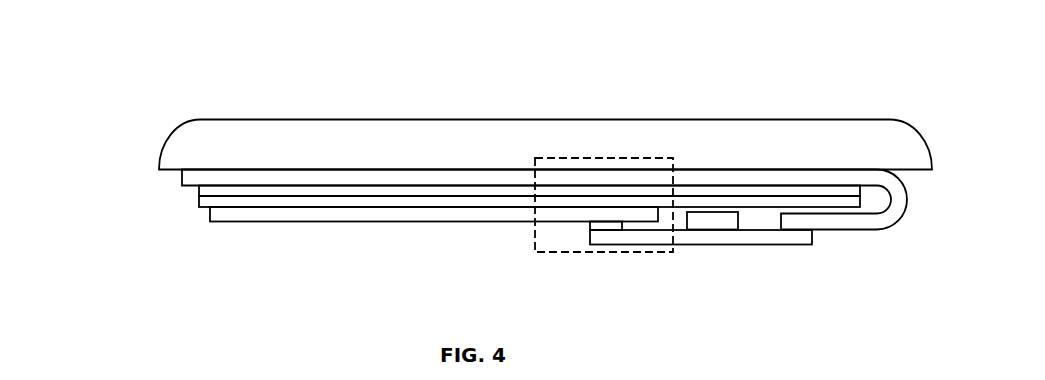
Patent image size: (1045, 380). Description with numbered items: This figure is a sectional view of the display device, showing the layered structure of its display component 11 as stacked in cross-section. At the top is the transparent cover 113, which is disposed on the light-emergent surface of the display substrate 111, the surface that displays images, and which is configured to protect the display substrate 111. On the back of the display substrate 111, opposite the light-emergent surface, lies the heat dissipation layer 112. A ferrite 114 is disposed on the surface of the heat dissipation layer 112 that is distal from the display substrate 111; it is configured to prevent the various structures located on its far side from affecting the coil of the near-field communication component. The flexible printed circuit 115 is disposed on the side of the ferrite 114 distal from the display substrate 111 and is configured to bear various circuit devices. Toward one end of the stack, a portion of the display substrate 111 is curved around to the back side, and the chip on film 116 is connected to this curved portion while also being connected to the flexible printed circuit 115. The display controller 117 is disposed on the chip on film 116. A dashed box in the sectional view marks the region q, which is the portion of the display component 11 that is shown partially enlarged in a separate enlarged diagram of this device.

The display component 11 is at (180, 47).
The display substrate 111 is at (182, 180).
The heat dissipation layer 112 is at (290, 192).
The transparent cover 113 is at (350, 119).
The ferrite 114 is at (199, 203).
The flexible printed circuit 115 is at (209, 218).
The chip on film 116 is at (620, 238).
The display controller 117 is at (703, 221).
The region q is at (605, 157).